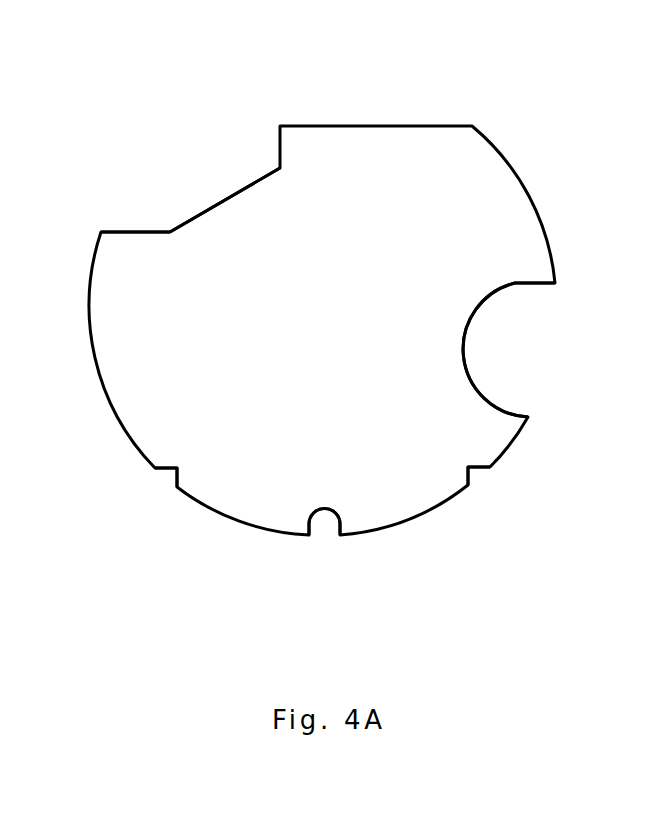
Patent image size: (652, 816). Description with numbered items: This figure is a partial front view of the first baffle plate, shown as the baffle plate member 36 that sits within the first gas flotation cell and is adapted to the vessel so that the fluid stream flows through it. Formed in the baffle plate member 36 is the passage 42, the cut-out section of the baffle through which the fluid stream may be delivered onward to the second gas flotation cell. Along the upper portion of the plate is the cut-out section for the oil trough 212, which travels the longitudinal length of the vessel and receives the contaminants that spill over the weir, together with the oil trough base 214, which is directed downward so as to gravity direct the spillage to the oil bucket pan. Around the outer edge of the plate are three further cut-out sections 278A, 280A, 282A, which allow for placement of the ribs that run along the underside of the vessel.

The baffle plate member 36 is at (490, 140).
The oil trough 212 is at (225, 184).
The oil trough base 214 is at (118, 232).
The passage 42 is at (485, 404).
The cut-out section 278A is at (183, 468).
The cut-out section 280A is at (335, 525).
The cut-out section 282A is at (477, 480).